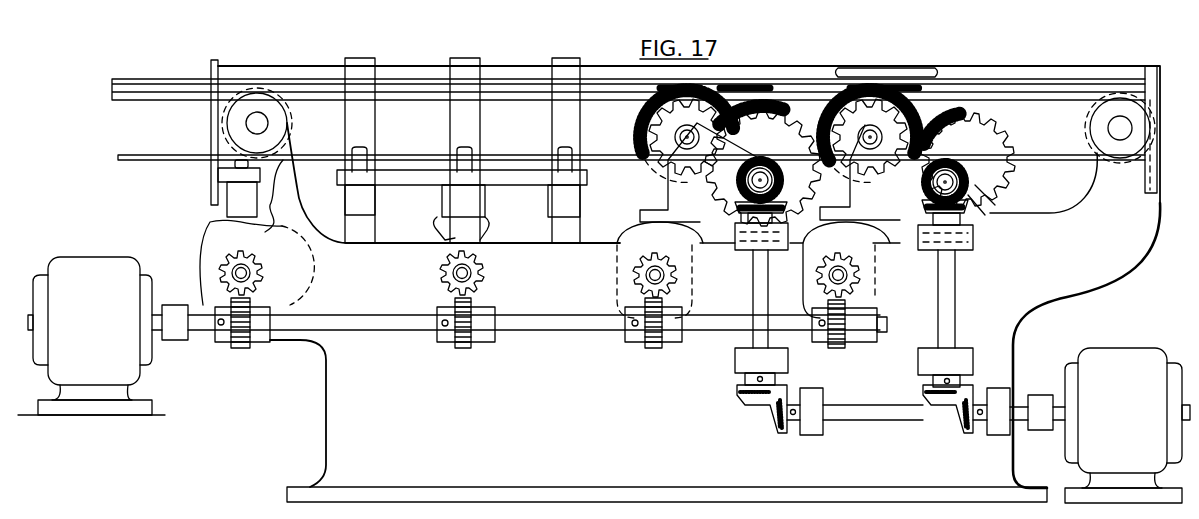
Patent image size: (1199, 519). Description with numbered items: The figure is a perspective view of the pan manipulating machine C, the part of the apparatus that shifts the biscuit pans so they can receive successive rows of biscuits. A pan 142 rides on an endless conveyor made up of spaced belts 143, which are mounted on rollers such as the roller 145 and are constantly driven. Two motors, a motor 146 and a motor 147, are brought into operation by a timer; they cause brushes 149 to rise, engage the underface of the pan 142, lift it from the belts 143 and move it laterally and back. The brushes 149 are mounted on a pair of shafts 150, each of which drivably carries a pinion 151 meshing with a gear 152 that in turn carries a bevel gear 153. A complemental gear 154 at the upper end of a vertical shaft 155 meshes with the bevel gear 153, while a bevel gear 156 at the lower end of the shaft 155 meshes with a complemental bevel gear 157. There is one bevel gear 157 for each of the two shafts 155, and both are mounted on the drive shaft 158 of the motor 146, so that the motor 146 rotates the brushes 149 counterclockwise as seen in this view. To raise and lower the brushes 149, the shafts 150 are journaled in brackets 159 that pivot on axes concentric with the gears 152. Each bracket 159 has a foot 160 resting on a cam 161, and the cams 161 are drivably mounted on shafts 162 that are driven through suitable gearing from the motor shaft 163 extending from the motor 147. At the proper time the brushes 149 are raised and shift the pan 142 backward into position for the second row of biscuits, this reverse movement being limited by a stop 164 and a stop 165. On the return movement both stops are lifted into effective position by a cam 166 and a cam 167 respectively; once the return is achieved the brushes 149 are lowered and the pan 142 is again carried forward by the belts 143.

The pan manipulating machine C is at (1038, 60).
The pan 142 is at (785, 78).
The spaced belts 143 is at (140, 162).
The roller 145 is at (1120, 95).
The motor 146 is at (1128, 355).
The motor 147 is at (78, 240).
The brushes 149 is at (937, 85).
The shafts 150 is at (870, 128).
The pinion 151 is at (833, 121).
The gear 152 is at (985, 131).
The bevel gear 153 is at (985, 195).
The complemental gear 154 is at (975, 220).
The shaft 155 is at (948, 305).
The bevel gear 156 is at (922, 391).
The complemental bevel gear 157 is at (965, 433).
The drive shaft 158 is at (860, 414).
The brackets 159 is at (897, 197).
The foot 160 is at (663, 170).
The cam 161 is at (625, 233).
The shafts 162 is at (672, 275).
The motor shaft 163 is at (560, 327).
The stop 164 is at (210, 125).
The stop 165 is at (470, 60).
The cam 166 is at (205, 237).
The cam 167 is at (465, 230).